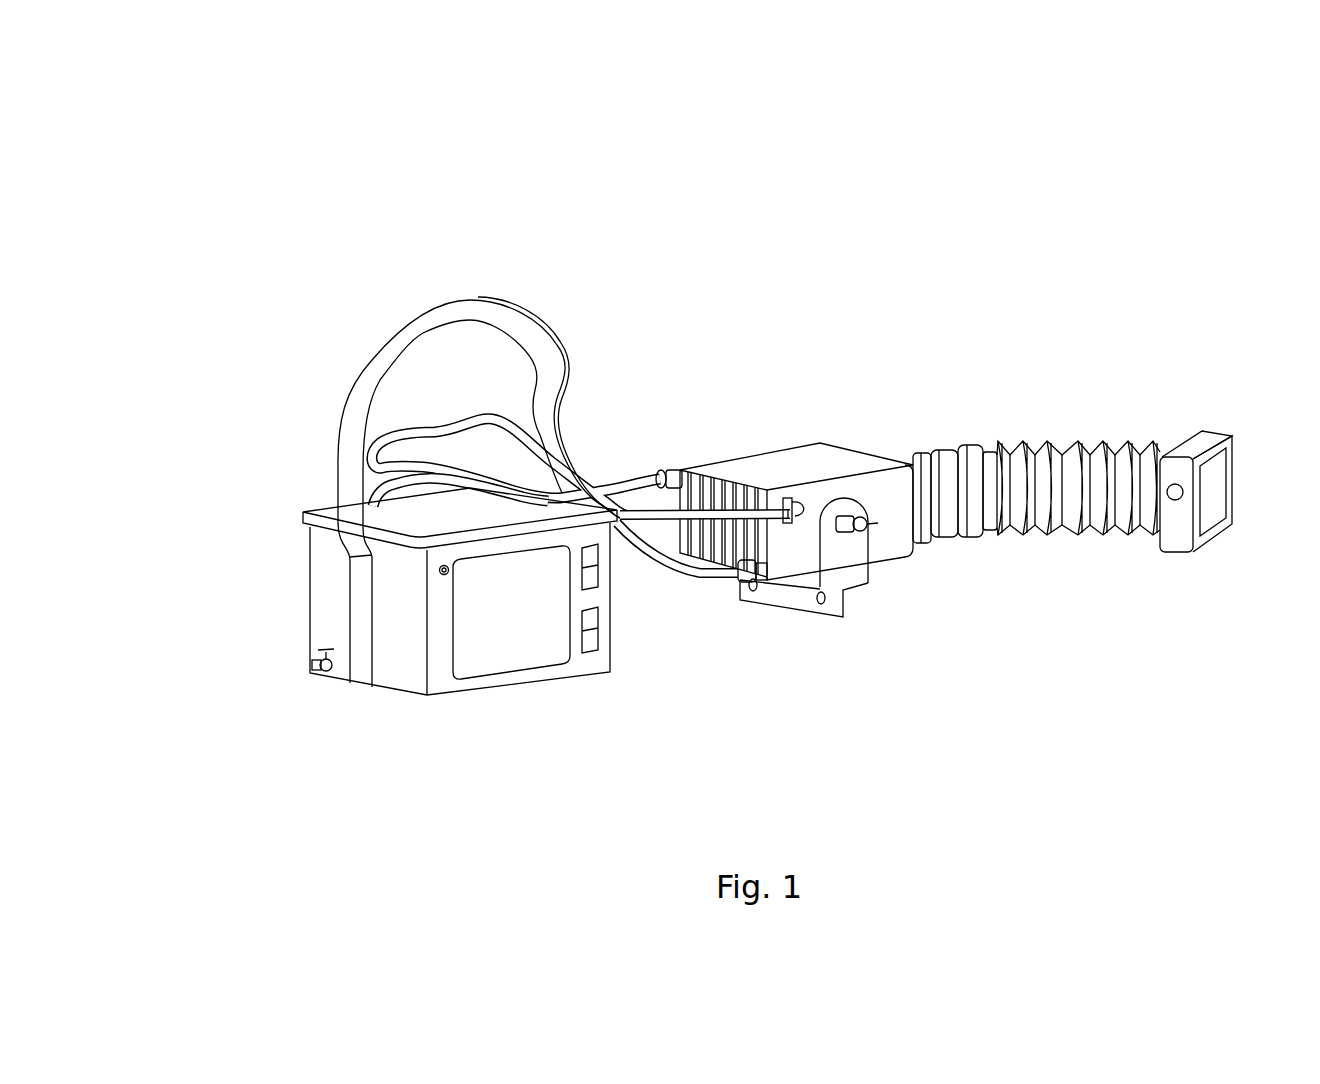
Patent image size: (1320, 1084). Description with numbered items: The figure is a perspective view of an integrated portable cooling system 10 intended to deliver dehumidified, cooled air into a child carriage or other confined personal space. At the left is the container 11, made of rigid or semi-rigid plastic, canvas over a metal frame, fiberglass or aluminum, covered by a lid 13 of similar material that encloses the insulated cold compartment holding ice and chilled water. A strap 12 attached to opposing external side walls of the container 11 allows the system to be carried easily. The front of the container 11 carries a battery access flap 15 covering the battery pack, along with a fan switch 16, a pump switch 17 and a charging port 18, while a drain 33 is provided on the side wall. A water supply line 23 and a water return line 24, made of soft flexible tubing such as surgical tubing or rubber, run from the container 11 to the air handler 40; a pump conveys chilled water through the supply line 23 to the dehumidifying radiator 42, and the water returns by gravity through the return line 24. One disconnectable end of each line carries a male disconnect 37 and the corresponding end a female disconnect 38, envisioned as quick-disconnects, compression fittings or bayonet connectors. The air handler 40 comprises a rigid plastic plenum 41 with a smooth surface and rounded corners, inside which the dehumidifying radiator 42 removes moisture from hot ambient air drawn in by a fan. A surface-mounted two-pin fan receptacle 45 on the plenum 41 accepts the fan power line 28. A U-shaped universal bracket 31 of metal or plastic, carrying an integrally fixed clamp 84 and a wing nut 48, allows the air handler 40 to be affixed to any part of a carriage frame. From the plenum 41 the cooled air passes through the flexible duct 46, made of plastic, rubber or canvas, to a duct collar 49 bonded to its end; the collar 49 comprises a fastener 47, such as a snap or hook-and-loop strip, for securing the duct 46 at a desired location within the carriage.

The portable cooling system 10 is at (272, 182).
The container 11 is at (403, 695).
The strap 12 is at (362, 392).
The lid 13 is at (328, 512).
The battery access flap 15 is at (523, 663).
The fan switch 16 is at (598, 573).
The pump switch 17 is at (598, 635).
The charging port 18 is at (444, 577).
The water supply line 23 is at (613, 486).
The water return line 24 is at (700, 575).
The fan power line 28 is at (800, 520).
The universal bracket 31 is at (853, 577).
The drain 33 is at (325, 670).
The male disconnect 37 is at (680, 468).
The female disconnect 38 is at (672, 476).
The air handler 40 is at (1036, 506).
The plenum 41 is at (777, 470).
The dehumidifying radiator 42 is at (714, 492).
The fan receptacle 45 is at (793, 498).
The flexible duct 46 is at (998, 450).
The fastener 47 is at (1175, 484).
The wing nut 48 is at (848, 517).
The duct collar 49 is at (1182, 543).
The clamp 84 is at (815, 605).